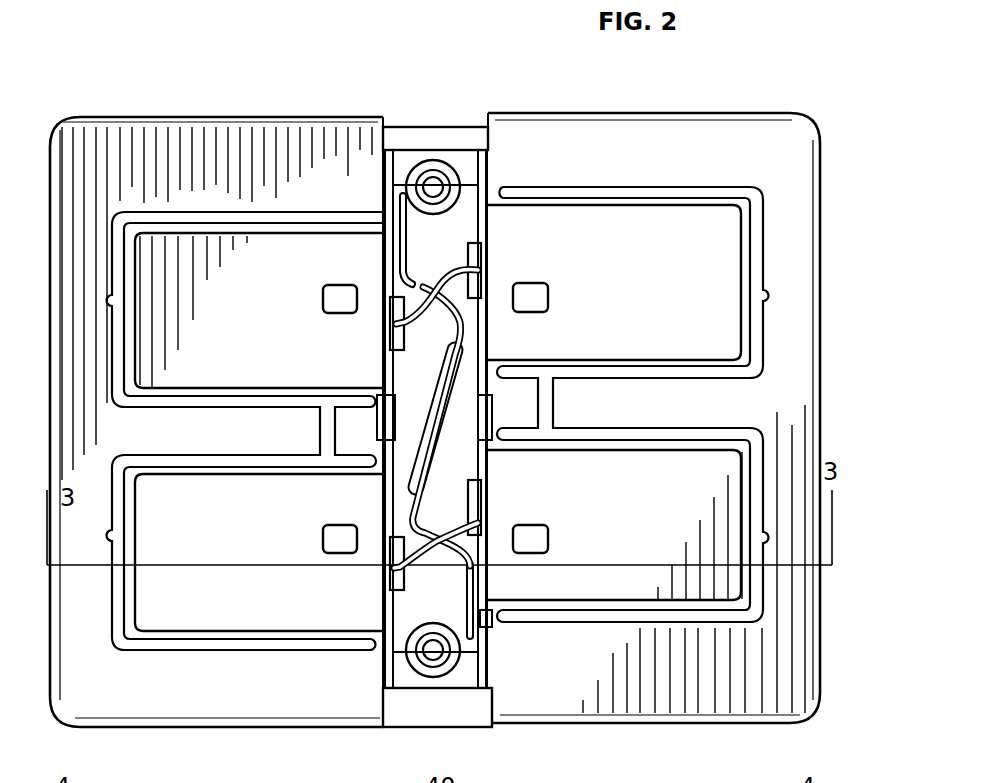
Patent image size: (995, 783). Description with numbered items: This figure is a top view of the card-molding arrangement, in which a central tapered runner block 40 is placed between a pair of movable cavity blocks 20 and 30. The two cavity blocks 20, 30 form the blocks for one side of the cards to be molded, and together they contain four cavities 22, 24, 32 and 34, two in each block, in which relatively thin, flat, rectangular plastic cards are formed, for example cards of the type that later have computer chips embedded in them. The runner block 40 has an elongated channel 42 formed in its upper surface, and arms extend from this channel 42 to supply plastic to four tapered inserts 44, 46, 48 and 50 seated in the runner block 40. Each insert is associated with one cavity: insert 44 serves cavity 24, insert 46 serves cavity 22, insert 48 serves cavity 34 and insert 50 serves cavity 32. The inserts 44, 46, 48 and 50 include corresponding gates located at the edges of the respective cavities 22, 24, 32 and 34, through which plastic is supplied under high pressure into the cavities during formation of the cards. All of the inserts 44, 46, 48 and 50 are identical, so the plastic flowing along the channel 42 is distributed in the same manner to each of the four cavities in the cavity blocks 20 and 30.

The movable cavity block 20 is at (290, 117).
The cavity 22 is at (155, 612).
The cavity 24 is at (235, 310).
The movable cavity block 30 is at (545, 113).
The cavity 32 is at (620, 588).
The cavity 34 is at (627, 235).
The central tapered runner block 40 is at (414, 147).
The elongated channel 42 is at (468, 374).
The tapered insert 44 is at (390, 340).
The tapered insert 46 is at (386, 584).
The tapered insert 48 is at (482, 255).
The tapered insert 50 is at (483, 497).